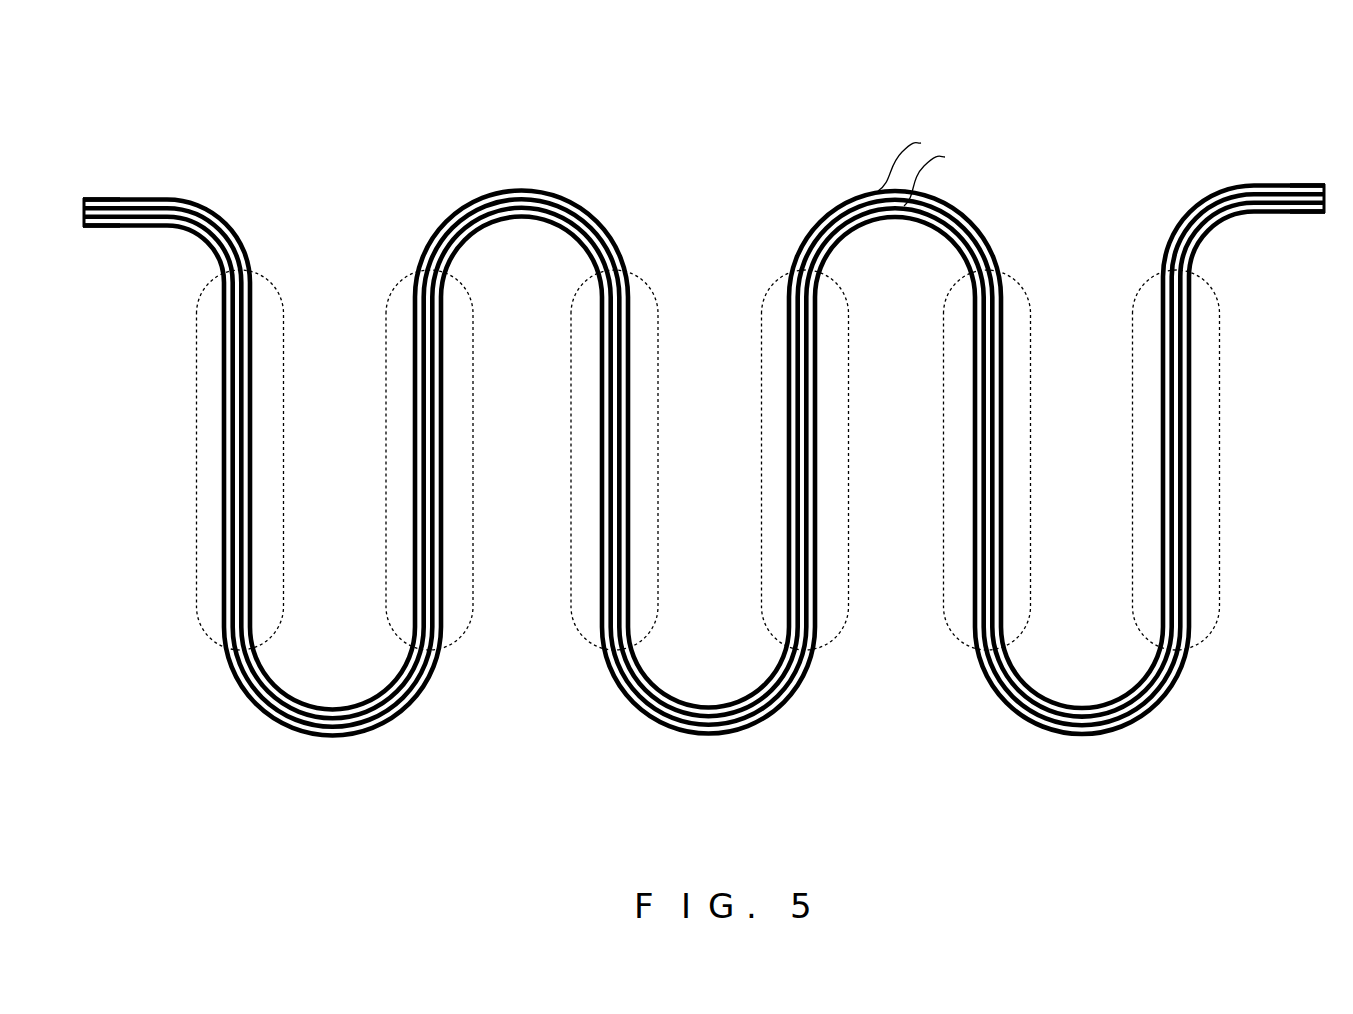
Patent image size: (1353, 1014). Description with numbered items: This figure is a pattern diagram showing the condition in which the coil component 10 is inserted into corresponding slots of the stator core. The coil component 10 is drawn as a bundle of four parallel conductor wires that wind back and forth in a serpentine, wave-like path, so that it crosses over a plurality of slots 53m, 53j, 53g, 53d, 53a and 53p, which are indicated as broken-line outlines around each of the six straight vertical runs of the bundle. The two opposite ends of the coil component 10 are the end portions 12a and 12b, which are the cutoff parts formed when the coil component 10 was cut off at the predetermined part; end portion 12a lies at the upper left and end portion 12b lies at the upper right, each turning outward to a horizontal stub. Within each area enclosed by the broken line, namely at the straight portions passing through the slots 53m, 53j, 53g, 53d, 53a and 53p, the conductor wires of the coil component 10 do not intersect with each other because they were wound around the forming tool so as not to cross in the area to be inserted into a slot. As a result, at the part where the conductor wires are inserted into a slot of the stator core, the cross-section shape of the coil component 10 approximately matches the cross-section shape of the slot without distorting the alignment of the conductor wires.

The coil component 10 is at (686, 118).
The end portion 12a is at (90, 179).
The end portion 12b is at (1313, 171).
The slot 53m is at (196, 489).
The slot 53j is at (386, 480).
The slot 53g is at (571, 480).
The slot 53d is at (761, 478).
The slot 53a is at (943, 478).
The slot 53p is at (1132, 476).